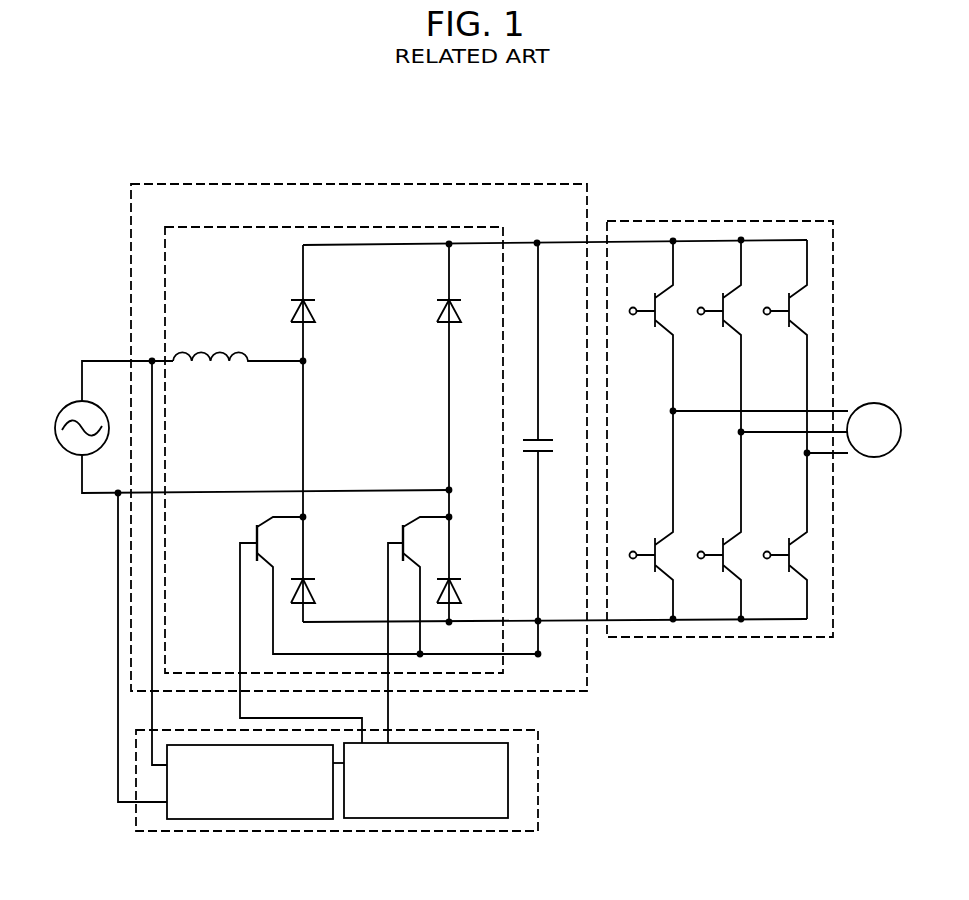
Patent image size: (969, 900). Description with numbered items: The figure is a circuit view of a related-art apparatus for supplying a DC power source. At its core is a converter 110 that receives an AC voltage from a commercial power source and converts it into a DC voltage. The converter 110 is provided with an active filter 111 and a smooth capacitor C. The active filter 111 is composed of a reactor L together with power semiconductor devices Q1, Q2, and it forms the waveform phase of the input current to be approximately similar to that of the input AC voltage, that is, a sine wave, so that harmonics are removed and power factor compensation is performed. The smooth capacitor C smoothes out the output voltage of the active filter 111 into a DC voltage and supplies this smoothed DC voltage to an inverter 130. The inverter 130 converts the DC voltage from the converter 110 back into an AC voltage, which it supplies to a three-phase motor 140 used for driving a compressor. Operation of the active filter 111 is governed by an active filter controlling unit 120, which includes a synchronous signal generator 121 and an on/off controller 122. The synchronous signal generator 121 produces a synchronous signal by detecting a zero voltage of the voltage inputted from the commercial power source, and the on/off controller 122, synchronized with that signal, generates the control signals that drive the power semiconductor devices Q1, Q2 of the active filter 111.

The converter 110 is at (349, 183).
The active filter 111 is at (267, 227).
The active filter controlling unit 120 is at (336, 831).
The synchronous signal generator 121 is at (250, 820).
The on/off controller 122 is at (428, 818).
The inverter 130 is at (703, 221).
The three-phase motor 140 is at (873, 403).
The reactor L is at (238, 346).
The smooth capacitor C is at (536, 450).
The power semiconductor device Q1 is at (384, 630).
The power semiconductor device Q2 is at (413, 630).